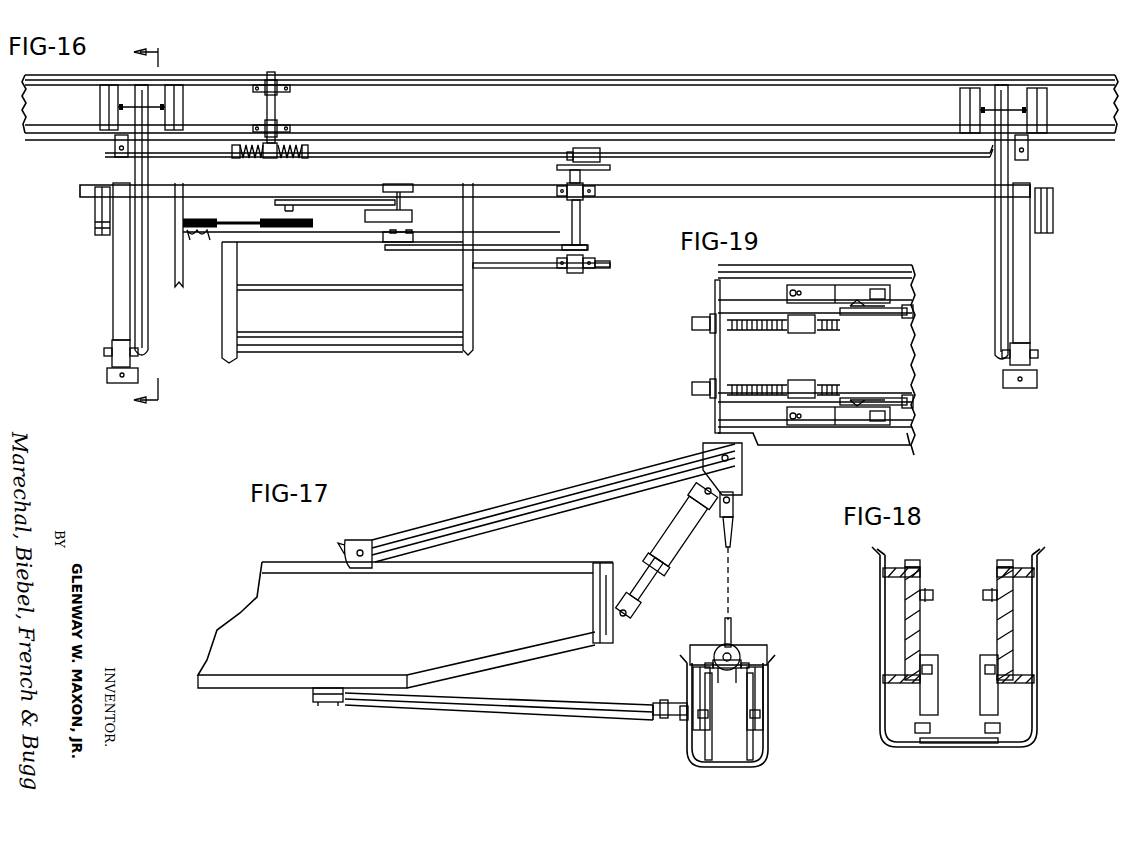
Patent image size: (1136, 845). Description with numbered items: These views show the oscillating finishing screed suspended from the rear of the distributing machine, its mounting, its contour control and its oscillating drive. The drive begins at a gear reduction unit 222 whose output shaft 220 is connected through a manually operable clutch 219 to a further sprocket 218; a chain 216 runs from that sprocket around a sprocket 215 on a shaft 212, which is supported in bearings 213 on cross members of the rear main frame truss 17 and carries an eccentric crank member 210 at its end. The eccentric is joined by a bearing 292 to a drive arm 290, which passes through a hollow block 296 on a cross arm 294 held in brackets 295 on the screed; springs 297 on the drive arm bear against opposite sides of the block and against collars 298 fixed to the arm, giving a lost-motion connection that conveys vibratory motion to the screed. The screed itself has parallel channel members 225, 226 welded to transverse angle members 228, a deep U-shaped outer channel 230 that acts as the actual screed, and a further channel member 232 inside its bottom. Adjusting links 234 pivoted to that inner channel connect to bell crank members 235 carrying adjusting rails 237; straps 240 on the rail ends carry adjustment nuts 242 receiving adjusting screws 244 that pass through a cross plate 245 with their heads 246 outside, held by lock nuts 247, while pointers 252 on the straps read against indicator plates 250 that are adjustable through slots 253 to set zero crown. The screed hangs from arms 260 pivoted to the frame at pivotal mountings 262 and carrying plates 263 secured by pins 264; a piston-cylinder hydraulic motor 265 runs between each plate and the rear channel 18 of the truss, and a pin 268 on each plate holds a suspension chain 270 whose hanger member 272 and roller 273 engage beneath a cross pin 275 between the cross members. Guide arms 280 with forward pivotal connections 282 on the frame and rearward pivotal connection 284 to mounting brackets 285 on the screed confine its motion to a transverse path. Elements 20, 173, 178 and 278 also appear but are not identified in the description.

In FIG. 16, the rear main frame truss 17 is at (737, 184).
In FIG. 16, the rear channel 18 is at (828, 187).
In FIG. 17, the rear channel 18 is at (593, 613).
In FIG. 17, the vehicle body 20 is at (262, 610).
In FIG. 16, the mounting bracket 173 is at (100, 213).
In FIG. 17, the mounting bracket 173 is at (293, 565).
In FIG. 16, the bracket flange 178 is at (98, 222).
In FIG. 16, the eccentric crank member 210 is at (614, 165).
In FIG. 16, the shaft 212 is at (583, 213).
In FIG. 16, the bearings 213 is at (570, 195).
In FIG. 16, the sprocket 215 is at (588, 248).
In FIG. 16, the chain 216 is at (515, 270).
In FIG. 16, the further sprocket 218 is at (397, 250).
In FIG. 16, the manually operable clutch 219 is at (402, 210).
In FIG. 16, the output shaft 220 is at (413, 198).
In FIG. 16, the gear reduction unit 222 is at (378, 224).
In FIG. 16, the channel member 225 is at (738, 88).
In FIG. 19, the channel member 225 is at (731, 295).
In FIG. 17, the channel member 225 is at (697, 680).
In FIG. 18, the channel member 225 is at (907, 625).
In FIG. 16, the channel member 226 is at (762, 135).
In FIG. 19, the channel member 226 is at (733, 424).
In FIG. 17, the channel member 226 is at (762, 690).
In FIG. 18, the channel member 226 is at (1015, 620).
In FIG. 16, the transverse angle members 228 is at (180, 102).
In FIG. 17, the transverse angle members 228 is at (765, 648).
In FIG. 16, the outer channel 230 is at (840, 105).
In FIG. 19, the outer channel 230 is at (908, 355).
In FIG. 17, the outer channel 230 is at (750, 765).
In FIG. 18, the outer channel 230 is at (937, 748).
In FIG. 18, the further channel member 232 is at (966, 743).
In FIG. 18, the adjusting links 234 is at (985, 660).
In FIG. 18, the bell crank members 235 is at (1005, 620).
In FIG. 18, the adjusting rails 237 is at (1000, 570).
In FIG. 19, the straps 240 is at (880, 395).
In FIG. 19, the adjustment nuts 242 is at (803, 334).
In FIG. 19, the adjusting screws 244 is at (767, 334).
In FIG. 19, the cross plate 245 is at (718, 356).
In FIG. 19, the heads 246 is at (692, 323).
In FIG. 19, the lock nuts 247 is at (722, 315).
In FIG. 19, the indicator plates 250 is at (830, 292).
In FIG. 19, the pointers 252 is at (857, 305).
In FIG. 19, the slots 253 is at (797, 290).
In FIG. 16, the arms 260 is at (141, 305).
In FIG. 17, the arms 260 is at (520, 503).
In FIG. 16, the pivotal mounting 262 is at (141, 354).
In FIG. 17, the pivotal mounting 262 is at (353, 545).
In FIG. 17, the plates 263 is at (737, 481).
In FIG. 17, the pins 264 is at (723, 460).
In FIG. 17, the piston-cylinder hydraulic motor 265 is at (672, 540).
In FIG. 17, the pin 268 is at (740, 509).
In FIG. 17, the suspension chain 270 is at (735, 546).
In FIG. 17, the hanger member 272 is at (718, 650).
In FIG. 17, the roller 273 is at (745, 662).
In FIG. 16, the cross pin 275 is at (112, 107).
In FIG. 17, the cross pin 275 is at (735, 640).
In FIG. 17, the lower plate 278 is at (247, 681).
In FIG. 16, the guide arms 280 is at (118, 290).
In FIG. 17, the guide arms 280 is at (481, 713).
In FIG. 16, the pivotal connections 282 is at (108, 373).
In FIG. 17, the pivotal connections 282 is at (322, 702).
In FIG. 16, the pivotal connection 284 is at (108, 155).
In FIG. 17, the pivotal connection 284 is at (659, 694).
In FIG. 17, the mounting brackets 285 is at (677, 718).
In FIG. 16, the drive arm 290 is at (450, 153).
In FIG. 16, the bearing 292 is at (588, 148).
In FIG. 16, the cross arm 294 is at (277, 103).
In FIG. 16, the brackets 295 is at (275, 82).
In FIG. 16, the hollow block 296 is at (270, 160).
In FIG. 16, the springs 297 is at (300, 145).
In FIG. 16, the collars 298 is at (236, 159).